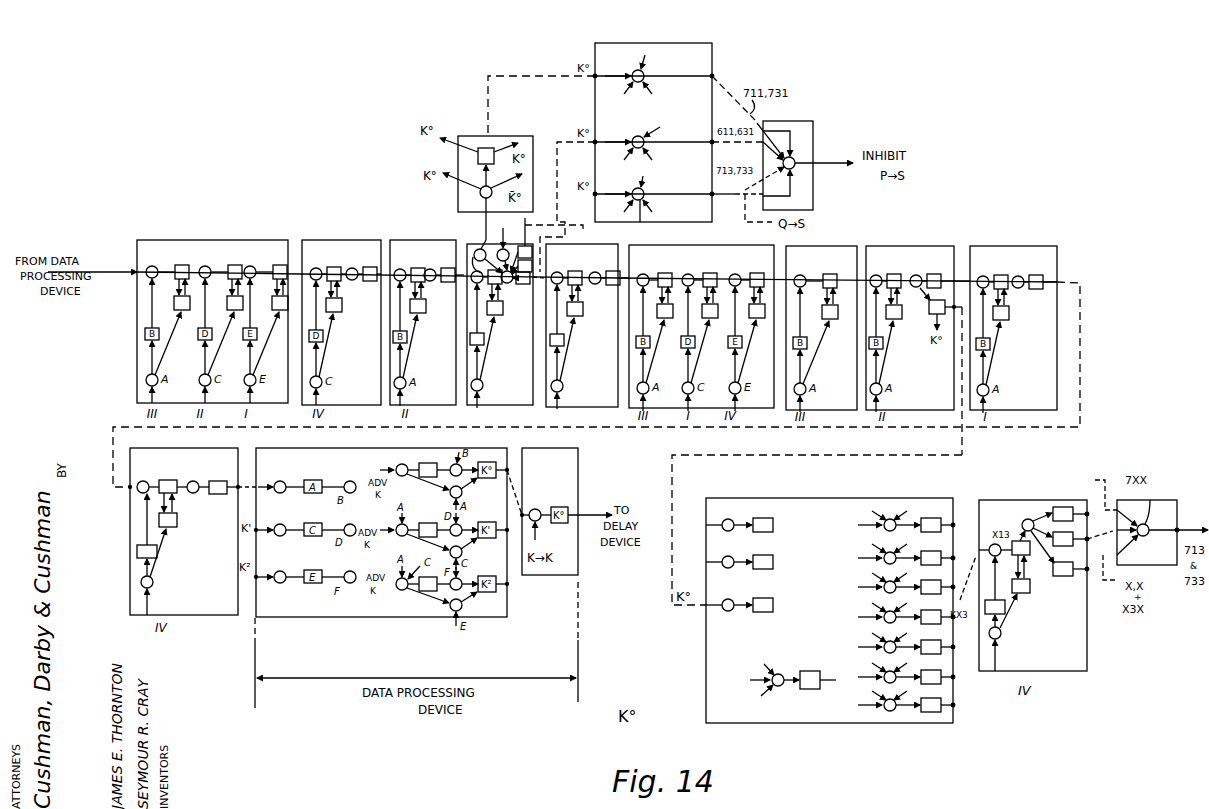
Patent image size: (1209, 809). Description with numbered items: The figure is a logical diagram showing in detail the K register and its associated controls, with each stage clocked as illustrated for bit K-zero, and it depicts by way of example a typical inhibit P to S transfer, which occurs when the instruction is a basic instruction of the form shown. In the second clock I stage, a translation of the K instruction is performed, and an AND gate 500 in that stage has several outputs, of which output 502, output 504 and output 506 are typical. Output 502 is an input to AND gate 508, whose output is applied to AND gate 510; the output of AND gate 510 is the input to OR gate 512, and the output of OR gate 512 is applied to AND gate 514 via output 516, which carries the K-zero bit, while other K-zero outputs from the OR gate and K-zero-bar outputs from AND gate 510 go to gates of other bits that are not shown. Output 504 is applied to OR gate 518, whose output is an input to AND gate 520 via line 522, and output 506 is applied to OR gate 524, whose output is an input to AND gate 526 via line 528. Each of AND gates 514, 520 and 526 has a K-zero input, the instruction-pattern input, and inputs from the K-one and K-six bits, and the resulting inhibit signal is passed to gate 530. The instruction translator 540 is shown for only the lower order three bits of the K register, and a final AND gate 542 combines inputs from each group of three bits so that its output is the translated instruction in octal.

The AND gate 500 is at (504, 285).
The output 502 is at (474, 250).
The output 504 is at (502, 248).
The output 506 is at (510, 284).
The AND gate 508 is at (485, 232).
The AND gate 510 is at (479, 194).
The OR gate 512 is at (477, 157).
The AND gate 514 is at (634, 71).
The output 516 is at (520, 80).
The OR gate 518 is at (538, 274).
The AND gate 520 is at (634, 137).
The line 522 is at (562, 184).
The OR gate 524 is at (564, 273).
The AND gate 526 is at (642, 222).
The line 528 is at (583, 232).
The inhibit gate 530 is at (800, 158).
The instruction translator 540 is at (845, 723).
The final AND gate 542 is at (1150, 502).